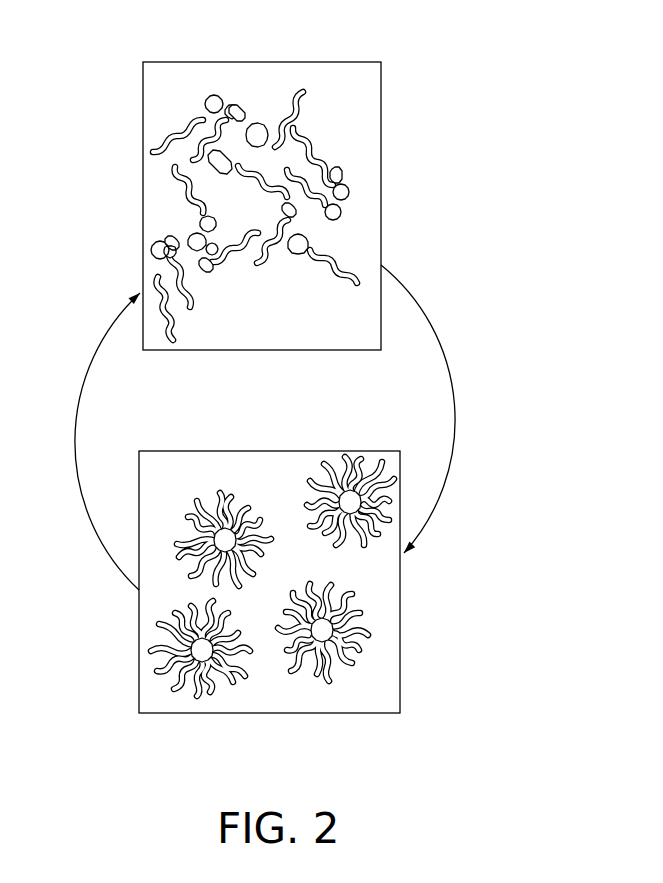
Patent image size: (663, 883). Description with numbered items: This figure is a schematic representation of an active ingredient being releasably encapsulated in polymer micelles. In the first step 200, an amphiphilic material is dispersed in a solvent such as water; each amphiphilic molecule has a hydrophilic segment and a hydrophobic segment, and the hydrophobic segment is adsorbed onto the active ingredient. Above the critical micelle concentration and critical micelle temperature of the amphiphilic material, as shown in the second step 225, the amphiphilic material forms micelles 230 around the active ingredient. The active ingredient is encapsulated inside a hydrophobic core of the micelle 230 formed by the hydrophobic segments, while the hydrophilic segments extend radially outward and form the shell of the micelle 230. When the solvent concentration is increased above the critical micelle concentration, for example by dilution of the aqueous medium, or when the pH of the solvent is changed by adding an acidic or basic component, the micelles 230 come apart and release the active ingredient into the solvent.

The first step 200 is at (143, 213).
The second step 225 is at (139, 659).
The micelle 230 is at (284, 584).